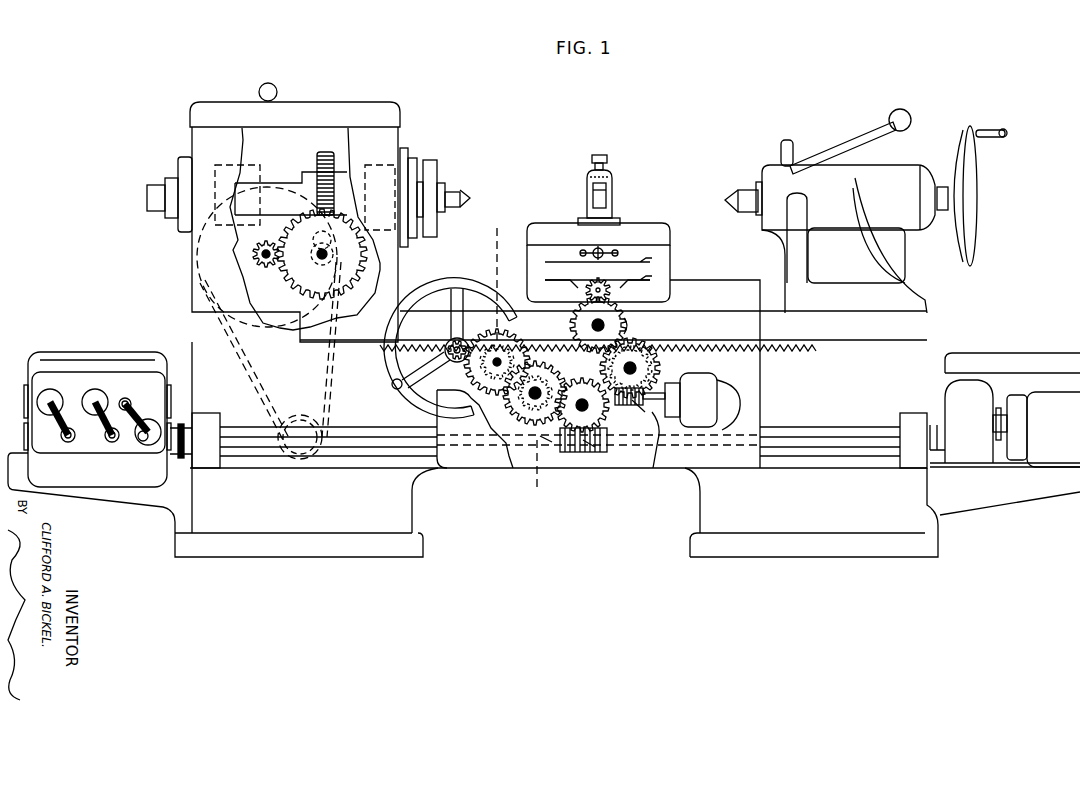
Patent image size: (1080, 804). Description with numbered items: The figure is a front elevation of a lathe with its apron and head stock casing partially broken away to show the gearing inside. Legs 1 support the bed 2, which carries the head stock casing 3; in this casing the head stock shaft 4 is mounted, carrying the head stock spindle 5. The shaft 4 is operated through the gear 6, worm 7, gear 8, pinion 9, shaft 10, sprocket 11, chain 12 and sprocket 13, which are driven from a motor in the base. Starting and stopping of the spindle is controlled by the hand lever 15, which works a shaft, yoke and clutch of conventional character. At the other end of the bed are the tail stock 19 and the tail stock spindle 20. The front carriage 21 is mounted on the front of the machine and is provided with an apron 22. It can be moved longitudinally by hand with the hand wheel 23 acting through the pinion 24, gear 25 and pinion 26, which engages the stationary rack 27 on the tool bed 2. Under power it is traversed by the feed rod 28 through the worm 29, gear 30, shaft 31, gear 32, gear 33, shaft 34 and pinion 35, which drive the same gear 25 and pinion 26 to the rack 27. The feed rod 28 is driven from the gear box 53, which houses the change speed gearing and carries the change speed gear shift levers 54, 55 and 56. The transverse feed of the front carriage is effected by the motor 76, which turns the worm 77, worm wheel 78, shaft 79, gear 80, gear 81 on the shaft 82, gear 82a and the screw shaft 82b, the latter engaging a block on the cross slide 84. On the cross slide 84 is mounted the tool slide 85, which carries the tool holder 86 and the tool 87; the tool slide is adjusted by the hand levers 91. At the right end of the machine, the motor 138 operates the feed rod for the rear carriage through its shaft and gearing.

The legs 1 is at (298, 545).
The bed 2 is at (908, 364).
The head stock casing 3 is at (298, 110).
The head stock shaft 4 is at (262, 182).
The head stock spindle 5 is at (445, 177).
The gear 6 is at (326, 150).
The worm 7 is at (308, 262).
The gear 8 is at (300, 292).
The pinion 9 is at (254, 252).
The shaft 10 is at (256, 258).
The sprocket 11 is at (303, 343).
The chain 12 is at (342, 306).
The sprocket 13 is at (300, 414).
The hand lever 15 is at (264, 83).
The tail stock 19 is at (885, 176).
The tail stock spindle 20 is at (752, 183).
The front carriage 21 is at (740, 286).
The apron 22 is at (752, 398).
The hand wheel 23 is at (410, 401).
The pinion 24 is at (455, 362).
The gear 25 is at (478, 330).
The pinion 26 is at (497, 277).
The stationary rack 27 is at (447, 356).
The feed rod 28 is at (546, 440).
The worm 29 is at (590, 445).
The gear 30 is at (603, 425).
The shaft 31 is at (582, 398).
The gear 32 is at (606, 409).
The gear 33 is at (537, 380).
The shaft 34 is at (530, 400).
The pinion 35 is at (527, 475).
The gear box 53 is at (118, 378).
The change speed gear shift lever 54 is at (52, 398).
The change speed gear shift lever 55 is at (96, 398).
The change speed gear shift lever 56 is at (139, 400).
The motor 76 is at (740, 380).
The worm 77 is at (638, 403).
The worm wheel 78 is at (668, 366).
The shaft 79 is at (634, 364).
The gear 80 is at (640, 350).
The gear 81 is at (626, 326).
The shaft 82 is at (594, 322).
The gear 82a is at (612, 294).
The screw shaft 82b is at (596, 290).
The cross slide 84 is at (665, 281).
The tool slide 85 is at (660, 240).
The tool holder 86 is at (614, 180).
The tool 87 is at (602, 200).
The hand levers 91 is at (606, 250).
The motor 138 is at (1050, 400).